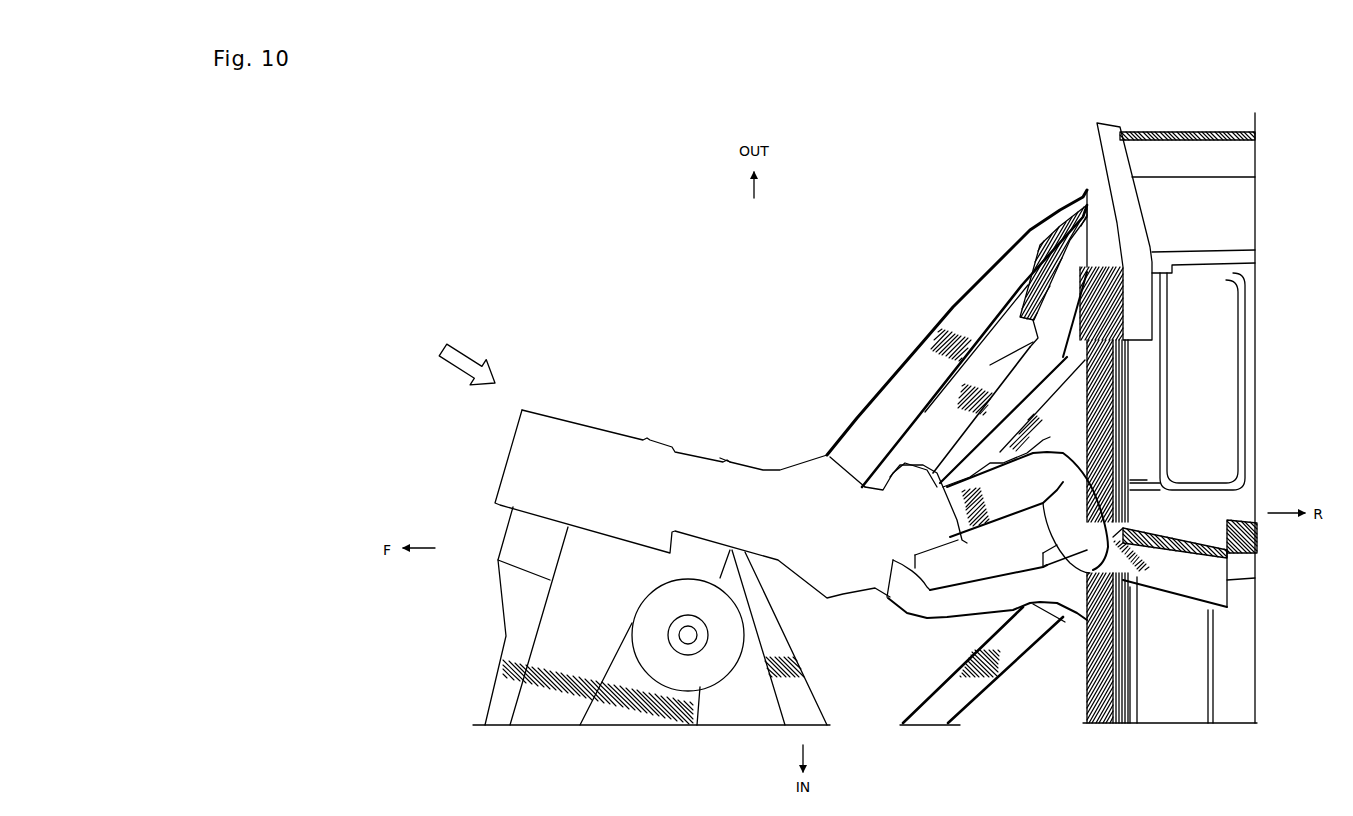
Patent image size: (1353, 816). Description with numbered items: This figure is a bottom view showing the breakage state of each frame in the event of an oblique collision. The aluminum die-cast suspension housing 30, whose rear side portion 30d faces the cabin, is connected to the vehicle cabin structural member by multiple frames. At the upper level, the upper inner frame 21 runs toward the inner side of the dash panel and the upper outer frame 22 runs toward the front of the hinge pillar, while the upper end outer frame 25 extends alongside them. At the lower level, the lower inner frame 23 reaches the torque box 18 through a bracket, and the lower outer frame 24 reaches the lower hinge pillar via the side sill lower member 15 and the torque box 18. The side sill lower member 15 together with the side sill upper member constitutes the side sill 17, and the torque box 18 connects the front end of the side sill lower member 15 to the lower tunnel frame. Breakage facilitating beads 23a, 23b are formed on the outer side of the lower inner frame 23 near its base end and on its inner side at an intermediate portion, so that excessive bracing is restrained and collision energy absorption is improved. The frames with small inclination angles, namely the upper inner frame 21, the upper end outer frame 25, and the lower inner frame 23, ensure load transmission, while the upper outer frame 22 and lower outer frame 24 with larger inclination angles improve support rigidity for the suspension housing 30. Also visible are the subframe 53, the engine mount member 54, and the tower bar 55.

The side sill lower member 15 is at (1193, 225).
The side sill 17 is at (1183, 128).
The torque box 18 is at (1187, 381).
The upper inner frame 21 is at (948, 606).
The upper outer frame 22 is at (1047, 417).
The lower inner frame 23 is at (1003, 500).
The breakage facilitating bead 23a is at (1130, 512).
The breakage facilitating bead 23b is at (1130, 480).
The lower outer frame 24 is at (950, 437).
The upper end outer frame 25 is at (985, 300).
The suspension housing 30 is at (593, 427).
The rear side portion 30d is at (678, 473).
The subframe 53 is at (602, 713).
The engine mount member 54 is at (648, 617).
The tower bar 55 is at (790, 653).